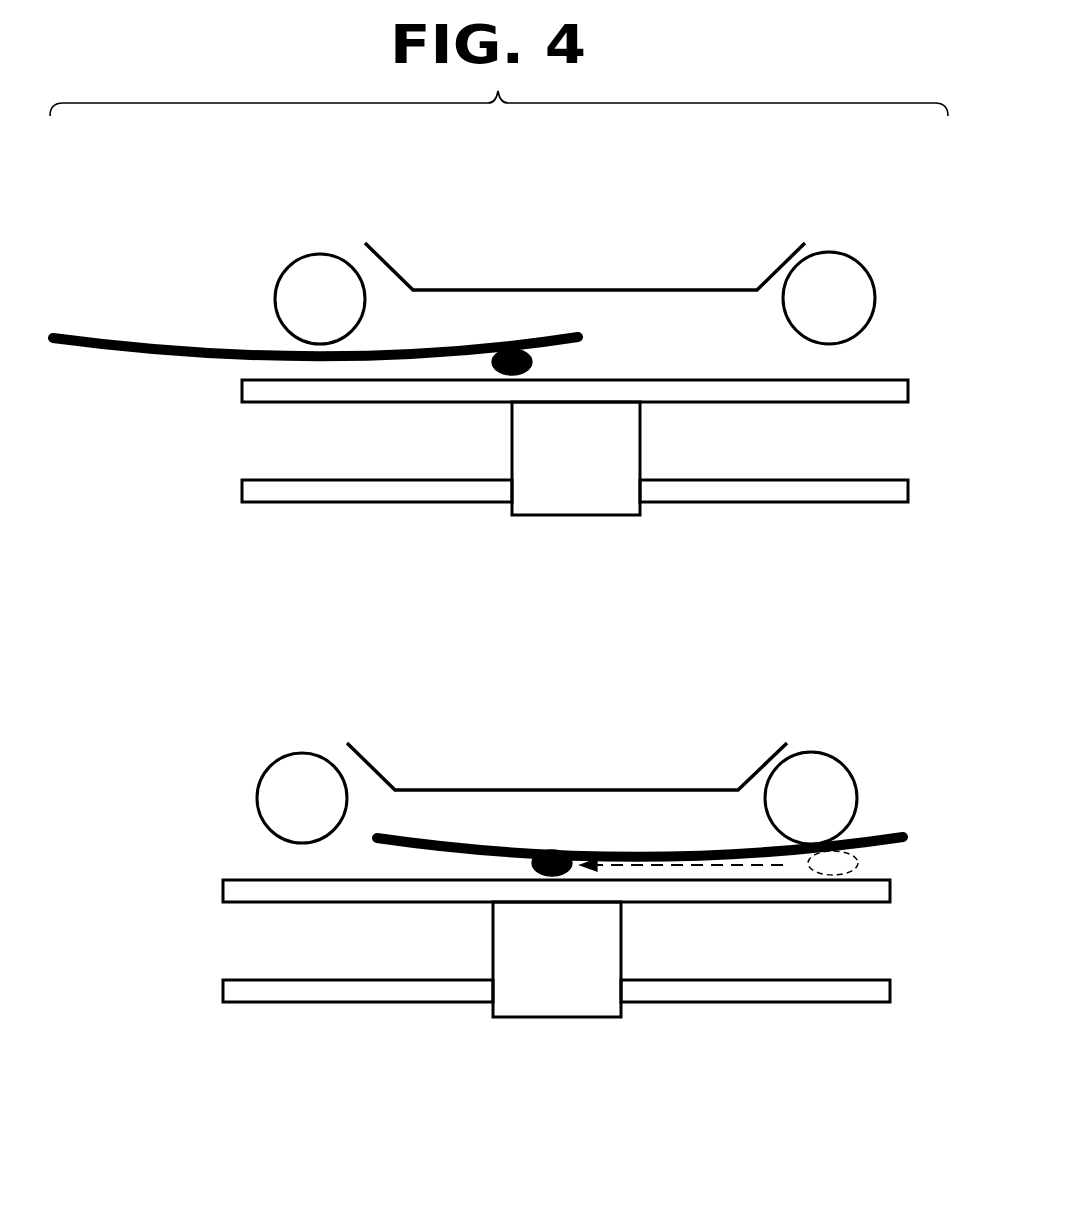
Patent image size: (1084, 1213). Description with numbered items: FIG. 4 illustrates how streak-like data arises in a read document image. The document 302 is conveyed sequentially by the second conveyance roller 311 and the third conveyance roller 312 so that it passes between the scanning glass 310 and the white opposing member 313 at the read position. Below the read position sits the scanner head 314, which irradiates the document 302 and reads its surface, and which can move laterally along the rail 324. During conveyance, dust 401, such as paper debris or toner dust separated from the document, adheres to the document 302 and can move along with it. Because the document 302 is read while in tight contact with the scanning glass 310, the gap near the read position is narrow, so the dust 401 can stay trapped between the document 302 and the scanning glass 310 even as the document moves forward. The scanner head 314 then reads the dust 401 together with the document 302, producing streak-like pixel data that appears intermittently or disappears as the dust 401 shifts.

The document 302 is at (120, 337).
The scanning glass 310 is at (315, 403).
The second conveyance roller 311 is at (300, 256).
The third conveyance roller 312 is at (847, 253).
The white opposing member 313 is at (780, 262).
The scanner head 314 is at (596, 516).
The rail 324 is at (797, 503).
The dust 401 is at (532, 362).